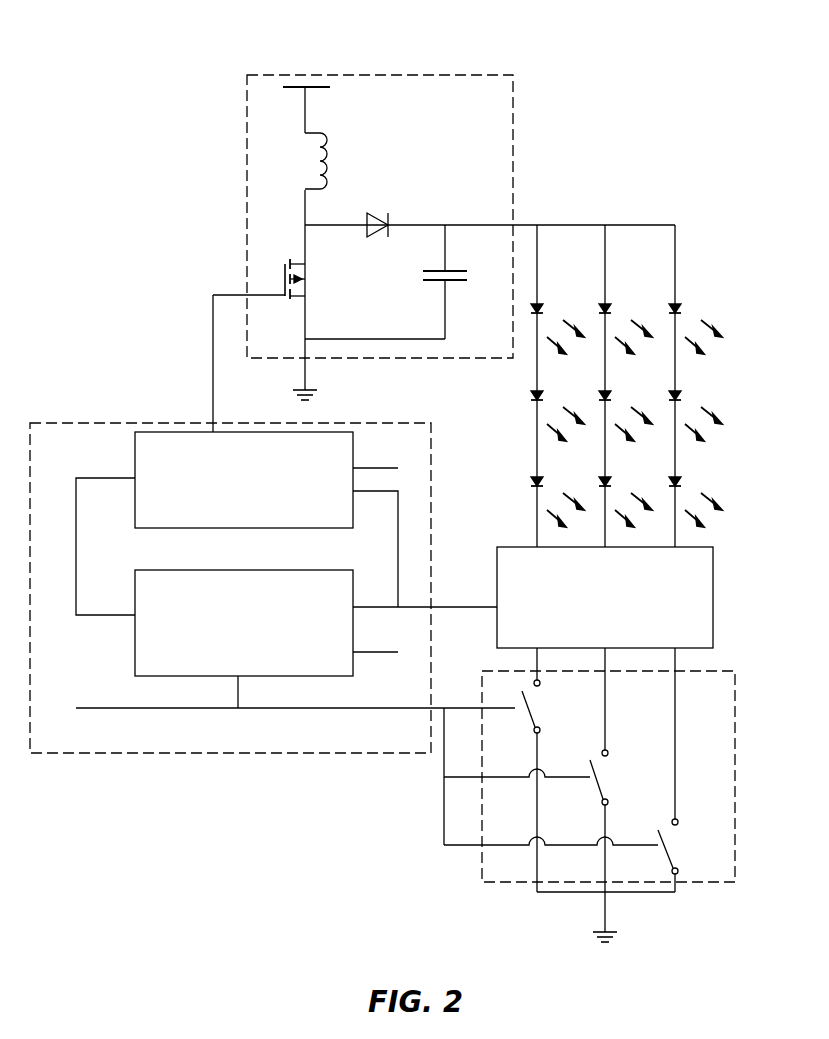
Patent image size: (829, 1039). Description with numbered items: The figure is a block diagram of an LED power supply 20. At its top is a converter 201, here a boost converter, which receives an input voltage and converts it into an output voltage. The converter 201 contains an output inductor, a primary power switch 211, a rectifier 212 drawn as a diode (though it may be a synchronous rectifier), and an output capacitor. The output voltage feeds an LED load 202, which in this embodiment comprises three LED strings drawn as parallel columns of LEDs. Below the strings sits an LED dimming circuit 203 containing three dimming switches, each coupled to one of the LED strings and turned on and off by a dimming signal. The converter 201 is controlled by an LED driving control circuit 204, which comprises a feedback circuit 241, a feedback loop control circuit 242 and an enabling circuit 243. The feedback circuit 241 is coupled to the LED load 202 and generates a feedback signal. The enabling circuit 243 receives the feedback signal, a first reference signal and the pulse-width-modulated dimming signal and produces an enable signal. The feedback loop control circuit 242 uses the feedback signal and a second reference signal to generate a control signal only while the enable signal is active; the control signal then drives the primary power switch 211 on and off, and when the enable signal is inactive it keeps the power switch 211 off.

The LED power supply 20 is at (236, 46).
The converter 201 is at (435, 359).
The primary power switch 211 is at (313, 277).
The rectifier 212 is at (377, 214).
The LED load 202 is at (677, 386).
The LED dimming circuit 203 is at (482, 862).
The LED driving control circuit 204 is at (314, 754).
The feedback circuit 241 is at (605, 597).
The feedback loop control circuit 242 is at (244, 480).
The enabling circuit 243 is at (244, 623).